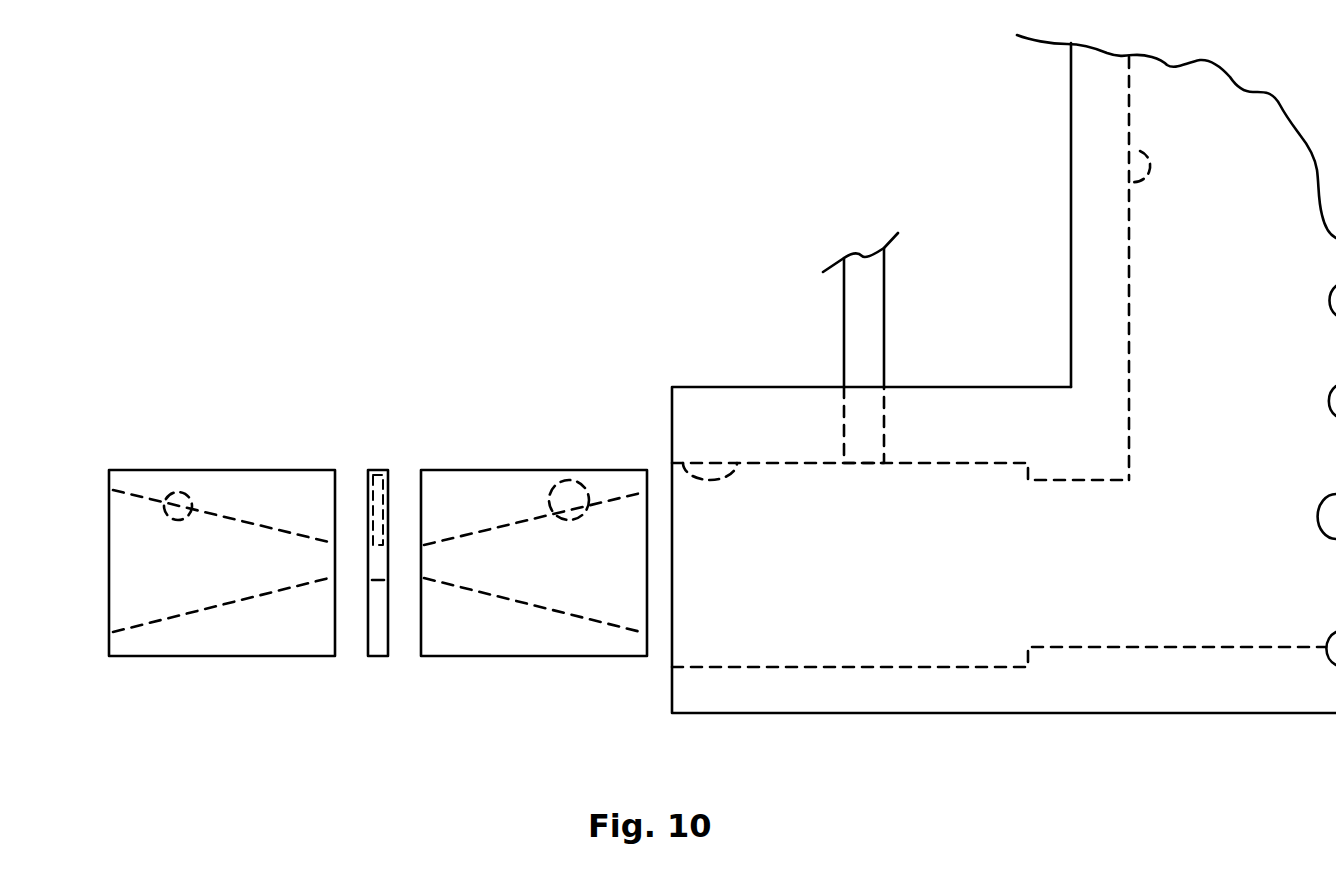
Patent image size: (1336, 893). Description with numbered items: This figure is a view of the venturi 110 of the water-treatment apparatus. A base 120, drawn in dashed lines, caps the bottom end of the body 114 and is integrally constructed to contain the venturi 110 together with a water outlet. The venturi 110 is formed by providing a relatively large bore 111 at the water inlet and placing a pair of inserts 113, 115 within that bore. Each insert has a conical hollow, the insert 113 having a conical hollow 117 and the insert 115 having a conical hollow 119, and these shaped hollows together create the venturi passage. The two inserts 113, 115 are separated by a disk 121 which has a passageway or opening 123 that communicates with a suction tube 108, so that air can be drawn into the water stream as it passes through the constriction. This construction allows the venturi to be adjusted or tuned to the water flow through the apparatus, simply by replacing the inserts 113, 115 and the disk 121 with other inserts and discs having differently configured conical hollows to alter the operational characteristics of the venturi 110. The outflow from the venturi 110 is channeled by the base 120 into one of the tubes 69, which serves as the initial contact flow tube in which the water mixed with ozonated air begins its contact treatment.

The venturi 110 is at (378, 302).
The insert 115 is at (135, 470).
The conical hollow 119 is at (182, 490).
The passageway or opening 123 is at (367, 488).
The disk 121 is at (389, 495).
The insert 113 is at (489, 470).
The conical hollow 117 is at (573, 472).
The bore 111 is at (672, 460).
The base 120 is at (913, 713).
The suction tube 108 is at (843, 326).
The body 114 is at (1053, 86).
The tube 69 is at (1138, 150).